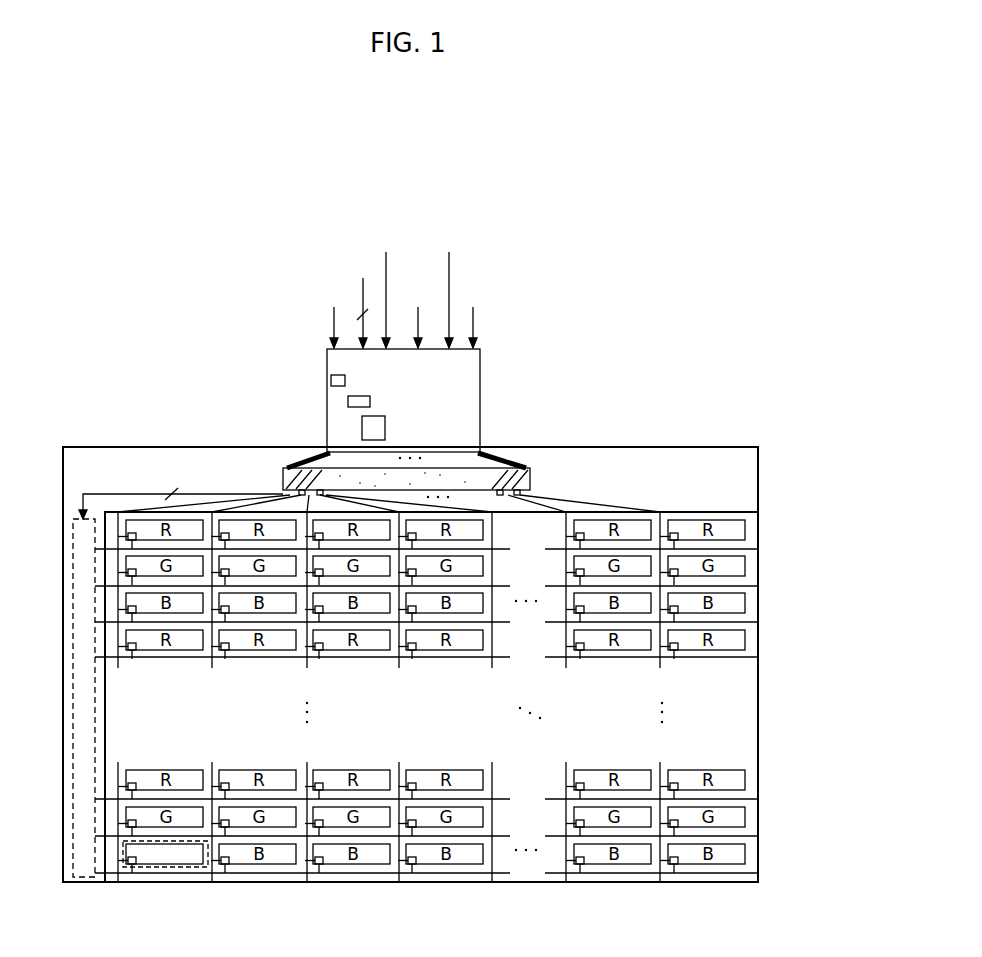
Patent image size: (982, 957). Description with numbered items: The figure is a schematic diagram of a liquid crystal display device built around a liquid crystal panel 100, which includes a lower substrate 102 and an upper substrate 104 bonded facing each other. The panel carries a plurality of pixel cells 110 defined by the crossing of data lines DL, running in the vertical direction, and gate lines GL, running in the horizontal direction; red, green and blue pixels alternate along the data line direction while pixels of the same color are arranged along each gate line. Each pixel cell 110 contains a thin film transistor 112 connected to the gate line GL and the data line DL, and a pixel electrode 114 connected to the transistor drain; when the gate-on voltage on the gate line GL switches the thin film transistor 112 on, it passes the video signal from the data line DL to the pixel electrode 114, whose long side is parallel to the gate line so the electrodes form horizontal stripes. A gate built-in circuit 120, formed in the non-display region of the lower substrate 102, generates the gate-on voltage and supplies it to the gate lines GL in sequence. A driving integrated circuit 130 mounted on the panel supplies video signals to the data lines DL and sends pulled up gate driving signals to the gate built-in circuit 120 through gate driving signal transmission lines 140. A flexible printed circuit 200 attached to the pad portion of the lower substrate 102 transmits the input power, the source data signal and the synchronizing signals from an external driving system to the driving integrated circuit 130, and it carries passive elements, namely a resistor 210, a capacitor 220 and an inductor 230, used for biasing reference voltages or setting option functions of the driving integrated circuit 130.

The liquid crystal panel 100 is at (673, 406).
The lower substrate 102 is at (758, 455).
The upper substrate 104 is at (745, 512).
The pixel cell 110 is at (162, 890).
The thin film transistor 112 is at (128, 865).
The pixel electrode 114 is at (147, 858).
The gate built-in circuit 120 is at (73, 706).
The driving integrated circuit 130 is at (531, 478).
The gate driving signal transmission lines 140 is at (118, 493).
The flexible printed circuit 200 is at (480, 370).
The resistor 210 is at (331, 380).
The capacitor 220 is at (348, 402).
The inductor 230 is at (362, 425).
The data line DL is at (118, 660).
The gate line GL is at (250, 658).